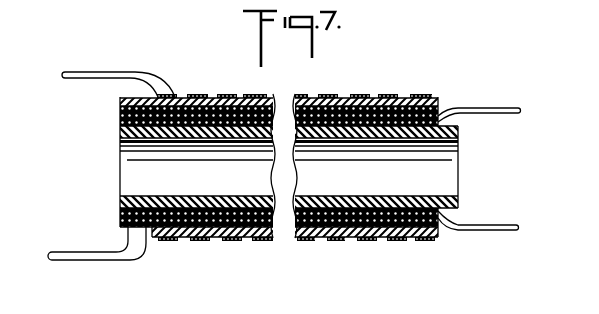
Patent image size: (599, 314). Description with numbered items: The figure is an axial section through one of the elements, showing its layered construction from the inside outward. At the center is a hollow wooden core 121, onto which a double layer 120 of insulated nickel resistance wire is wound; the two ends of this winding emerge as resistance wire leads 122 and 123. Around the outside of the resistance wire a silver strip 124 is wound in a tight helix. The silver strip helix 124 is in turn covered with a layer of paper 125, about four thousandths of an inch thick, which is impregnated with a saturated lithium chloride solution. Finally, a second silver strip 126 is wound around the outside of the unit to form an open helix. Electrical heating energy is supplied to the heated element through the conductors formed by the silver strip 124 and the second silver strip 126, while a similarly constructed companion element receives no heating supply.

The double layer of insulated nickel resistance wire 120 is at (294, 96).
The hollow wooden core 121 is at (121, 146).
The resistance wire lead 122 is at (492, 107).
The resistance wire lead 123 is at (494, 231).
The silver strip 124 is at (88, 258).
The layer of paper 125 is at (294, 240).
The second silver strip 126 is at (96, 71).